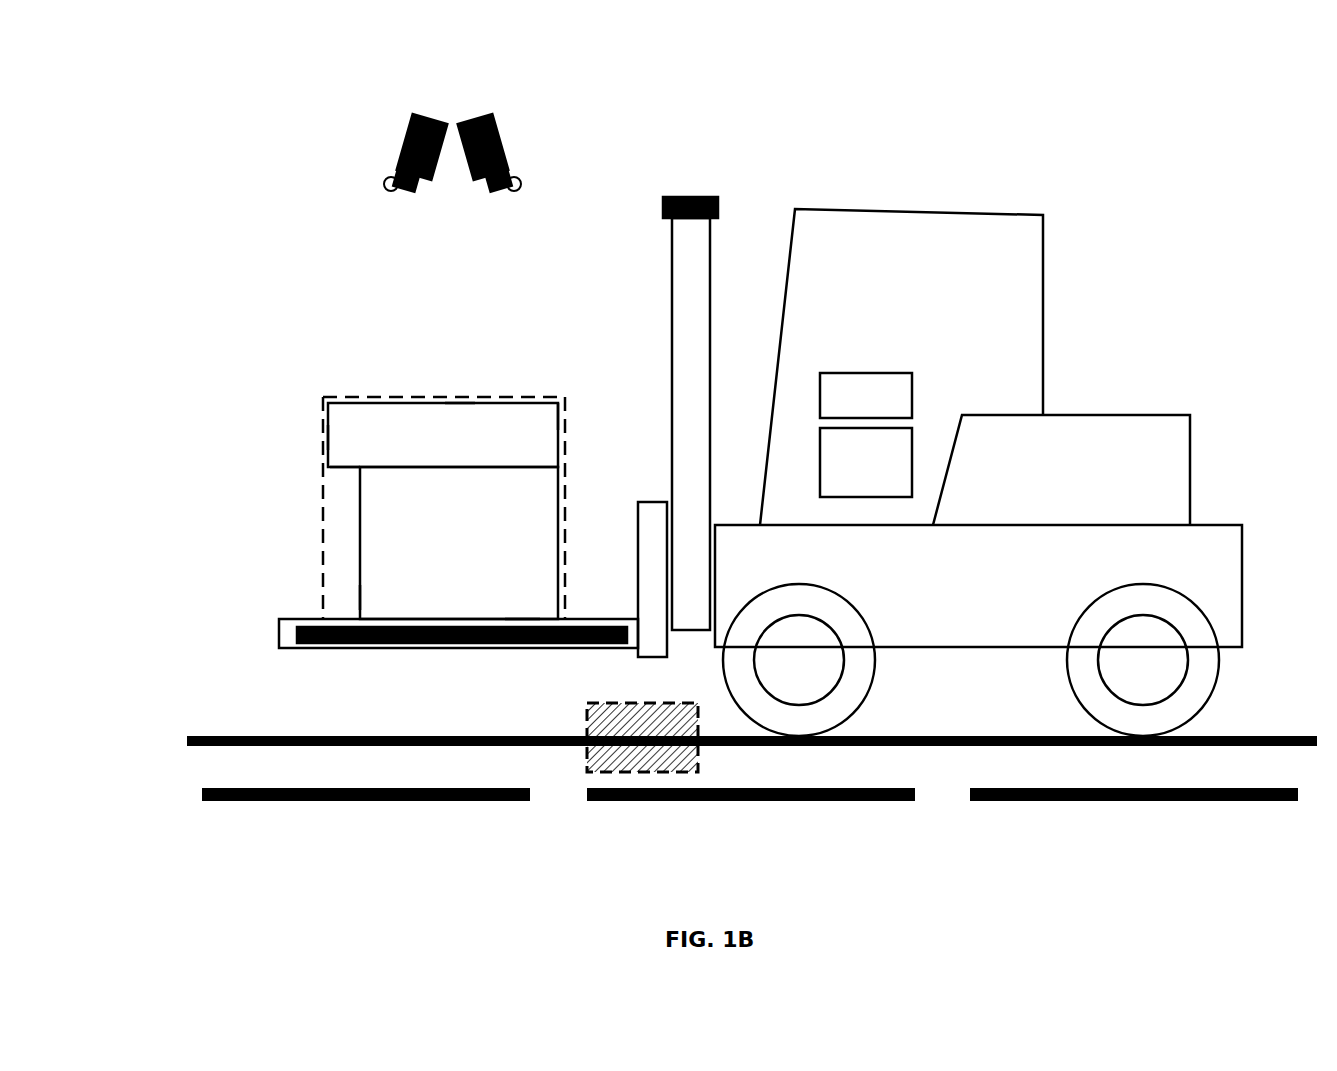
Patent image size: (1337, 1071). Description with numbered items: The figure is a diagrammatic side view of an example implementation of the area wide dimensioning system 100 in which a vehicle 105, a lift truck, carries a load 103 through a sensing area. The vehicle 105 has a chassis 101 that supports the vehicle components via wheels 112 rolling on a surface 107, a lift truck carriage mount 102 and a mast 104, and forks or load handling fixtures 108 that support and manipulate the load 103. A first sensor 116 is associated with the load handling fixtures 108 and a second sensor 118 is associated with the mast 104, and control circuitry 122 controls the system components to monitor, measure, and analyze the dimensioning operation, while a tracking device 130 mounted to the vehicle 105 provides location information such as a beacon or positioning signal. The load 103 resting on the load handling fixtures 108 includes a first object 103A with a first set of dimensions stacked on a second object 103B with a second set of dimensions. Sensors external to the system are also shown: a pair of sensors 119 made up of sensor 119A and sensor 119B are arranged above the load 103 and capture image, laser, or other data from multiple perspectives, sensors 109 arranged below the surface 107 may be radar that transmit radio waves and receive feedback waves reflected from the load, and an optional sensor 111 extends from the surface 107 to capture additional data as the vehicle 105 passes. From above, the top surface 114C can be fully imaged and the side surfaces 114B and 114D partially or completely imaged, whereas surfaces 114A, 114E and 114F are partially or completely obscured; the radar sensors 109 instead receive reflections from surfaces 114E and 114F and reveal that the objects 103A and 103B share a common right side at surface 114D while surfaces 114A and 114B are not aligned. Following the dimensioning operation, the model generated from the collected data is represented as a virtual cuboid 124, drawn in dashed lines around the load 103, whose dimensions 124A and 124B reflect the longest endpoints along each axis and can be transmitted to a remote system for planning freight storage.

The area wide dimensioning system 100 is at (1128, 158).
The chassis 101 is at (960, 648).
The lift truck carriage mount 102 is at (638, 655).
The load 103 is at (569, 367).
The first object 103A is at (443, 435).
The second object 103B is at (459, 543).
The lift truck carriage (mast) 104 is at (690, 632).
The vehicle 105 is at (1133, 412).
The surface 107 is at (1232, 737).
The load handling fixtures 108 is at (498, 650).
The sensors 109 is at (445, 802).
The sensor 111 is at (699, 752).
The wheels 112 is at (870, 690).
The surface 114A is at (357, 596).
The surface 114B is at (325, 438).
The surface 114C is at (458, 400).
The surface 114D is at (567, 403).
The surface 114E is at (522, 615).
The surface 114F is at (342, 471).
The first sensor 116 is at (295, 648).
The second sensor 118 is at (720, 194).
The sensors (external sensor pair) 119 is at (474, 67).
The sensor 119A is at (413, 115).
The sensor 119B is at (492, 115).
The control circuitry 122 is at (866, 462).
The virtual cuboid 124 is at (320, 395).
The dimension 124A is at (410, 393).
The dimension 124B is at (319, 548).
The tracking device 130 is at (866, 395).